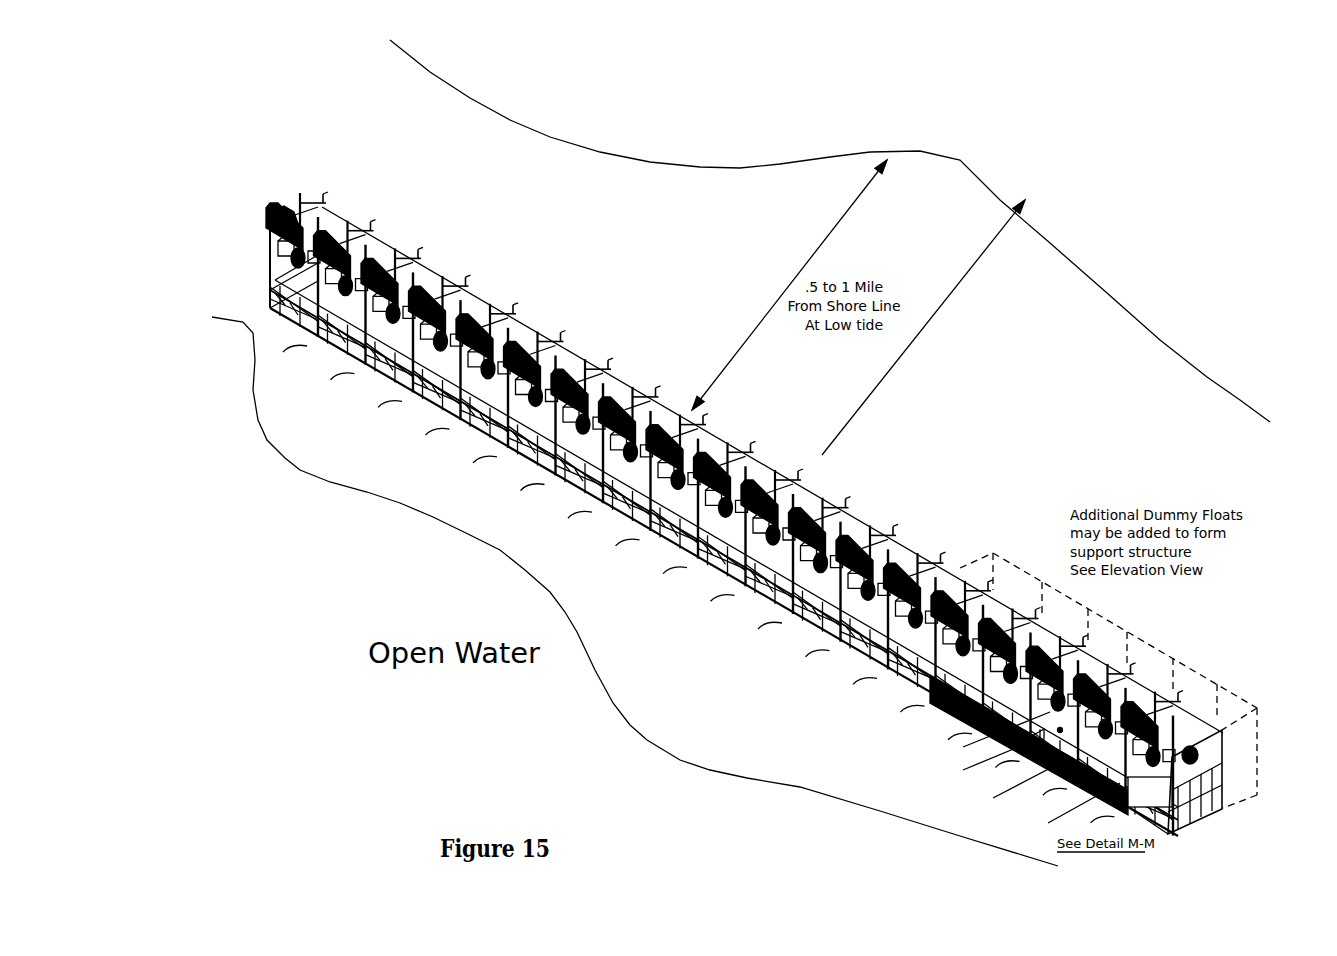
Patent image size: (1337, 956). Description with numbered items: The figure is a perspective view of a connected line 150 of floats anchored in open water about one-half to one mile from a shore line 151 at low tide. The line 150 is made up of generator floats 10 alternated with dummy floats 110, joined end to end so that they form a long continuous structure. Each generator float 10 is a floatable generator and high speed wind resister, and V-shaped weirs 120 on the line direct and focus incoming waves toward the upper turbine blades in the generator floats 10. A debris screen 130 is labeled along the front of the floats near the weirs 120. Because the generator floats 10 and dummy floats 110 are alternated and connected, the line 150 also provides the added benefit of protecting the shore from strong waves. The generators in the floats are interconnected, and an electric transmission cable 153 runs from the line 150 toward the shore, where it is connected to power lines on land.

The generator float 10 is at (1065, 781).
The dummy float 110 is at (996, 722).
The V-shaped weir 120 is at (930, 772).
The debris screen 130 is at (979, 745).
The connected line of floats 150 is at (744, 514).
The shore line 151 is at (830, 231).
The electric transmission cable 153 is at (956, 327).